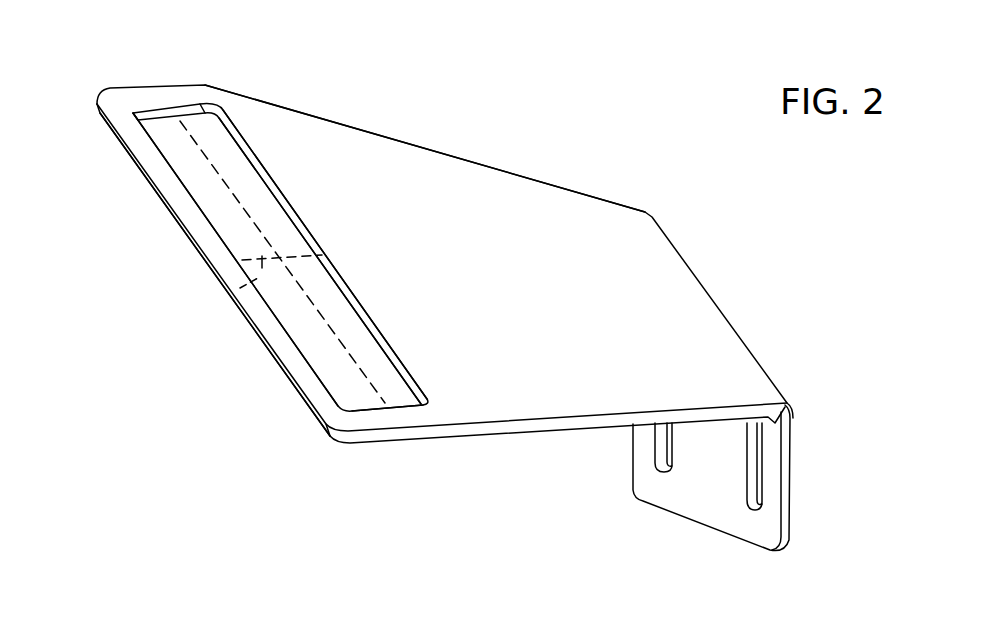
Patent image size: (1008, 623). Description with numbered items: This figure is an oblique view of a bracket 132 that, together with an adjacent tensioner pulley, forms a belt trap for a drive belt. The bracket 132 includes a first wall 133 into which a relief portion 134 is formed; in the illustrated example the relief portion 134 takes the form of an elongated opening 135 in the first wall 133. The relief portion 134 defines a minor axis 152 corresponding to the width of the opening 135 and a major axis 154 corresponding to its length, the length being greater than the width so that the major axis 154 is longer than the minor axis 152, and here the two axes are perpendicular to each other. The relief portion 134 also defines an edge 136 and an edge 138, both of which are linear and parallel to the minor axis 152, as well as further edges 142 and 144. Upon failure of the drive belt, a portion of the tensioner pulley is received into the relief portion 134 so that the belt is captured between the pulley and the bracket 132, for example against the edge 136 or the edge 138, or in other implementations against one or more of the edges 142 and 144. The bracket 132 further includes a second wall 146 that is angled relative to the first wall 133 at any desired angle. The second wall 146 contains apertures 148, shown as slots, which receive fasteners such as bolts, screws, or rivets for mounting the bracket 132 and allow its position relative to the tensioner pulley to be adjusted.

The bracket 132 is at (544, 107).
The first wall 133 is at (383, 137).
The relief portion 134 is at (183, 101).
The edge 136 is at (325, 254).
The opening 135 is at (173, 177).
The edge 138 is at (378, 413).
The edge 142 is at (203, 217).
The edge 144 is at (337, 280).
The second wall 146 is at (790, 452).
The apertures 148 is at (747, 503).
The minor axis 152 is at (255, 278).
The major axis 154 is at (237, 193).